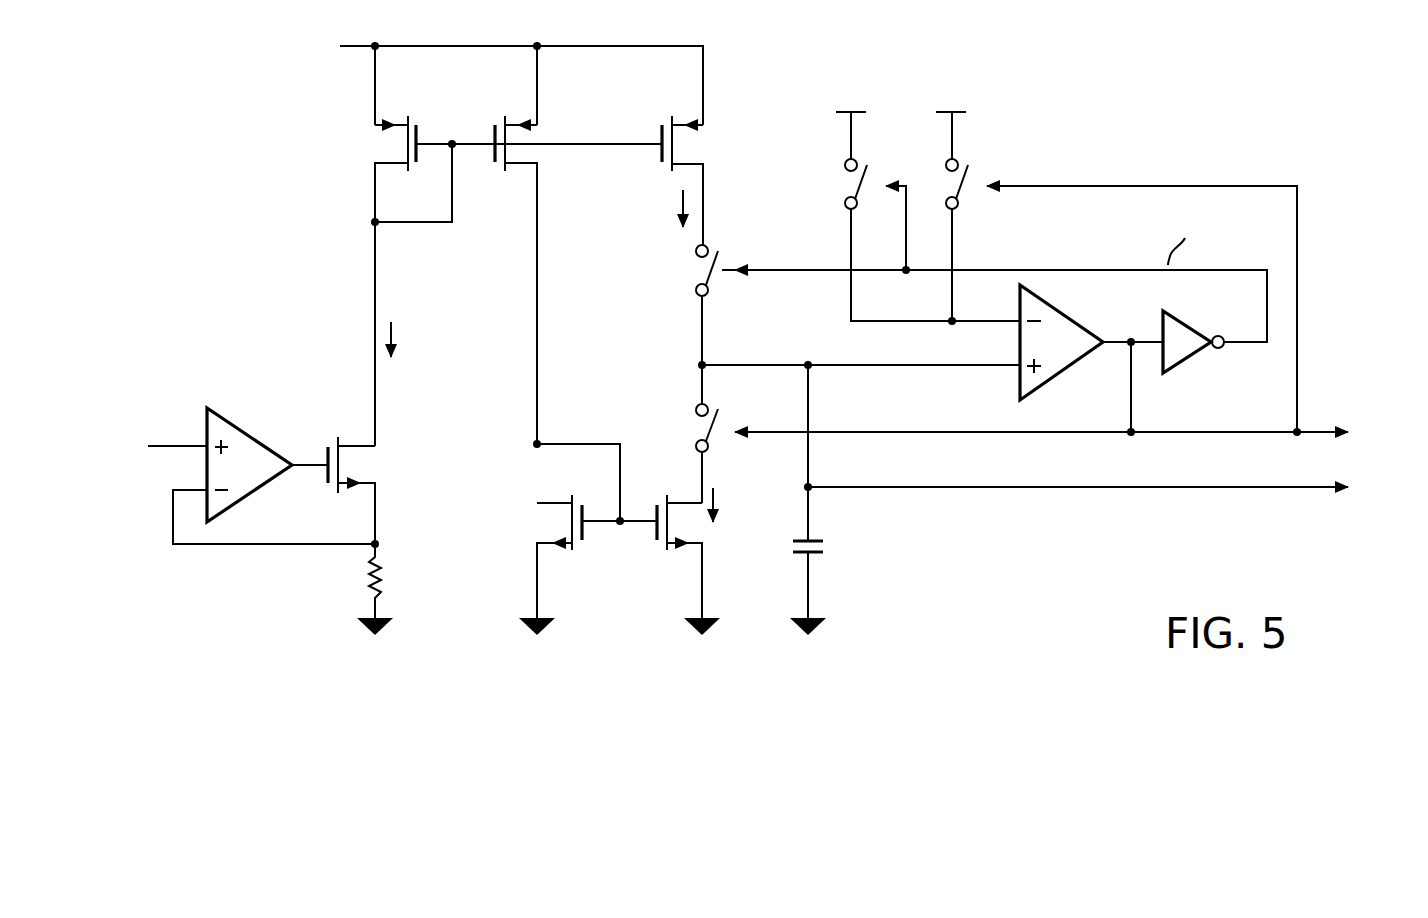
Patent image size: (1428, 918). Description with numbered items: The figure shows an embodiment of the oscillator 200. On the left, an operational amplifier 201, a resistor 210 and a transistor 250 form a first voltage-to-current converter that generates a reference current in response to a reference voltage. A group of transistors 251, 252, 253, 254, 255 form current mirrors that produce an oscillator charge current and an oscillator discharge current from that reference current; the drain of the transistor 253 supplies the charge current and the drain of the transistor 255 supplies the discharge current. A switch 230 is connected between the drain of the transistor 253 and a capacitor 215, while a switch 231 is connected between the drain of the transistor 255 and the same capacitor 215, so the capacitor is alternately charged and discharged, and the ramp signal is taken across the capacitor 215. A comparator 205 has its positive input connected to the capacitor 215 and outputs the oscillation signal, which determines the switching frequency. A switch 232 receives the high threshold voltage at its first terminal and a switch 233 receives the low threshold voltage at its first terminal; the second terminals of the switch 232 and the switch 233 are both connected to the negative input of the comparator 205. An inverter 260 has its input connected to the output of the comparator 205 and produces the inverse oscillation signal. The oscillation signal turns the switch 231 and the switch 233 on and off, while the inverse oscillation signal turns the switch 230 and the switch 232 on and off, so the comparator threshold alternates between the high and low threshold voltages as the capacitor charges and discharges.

The oscillator 200 is at (1277, 62).
The operational amplifier 201 is at (252, 431).
The comparator 205 is at (1065, 375).
The resistor 210 is at (390, 582).
The capacitor 215 is at (828, 545).
The switch 230 is at (692, 272).
The switch 231 is at (692, 427).
The switch 232 is at (840, 183).
The switch 233 is at (965, 205).
The transistor 250 is at (373, 466).
The transistor 251 is at (370, 145).
The transistor 252 is at (542, 155).
The transistor 253 is at (702, 145).
The transistor 254 is at (536, 525).
The transistor 255 is at (667, 557).
The inverter 260 is at (1183, 368).